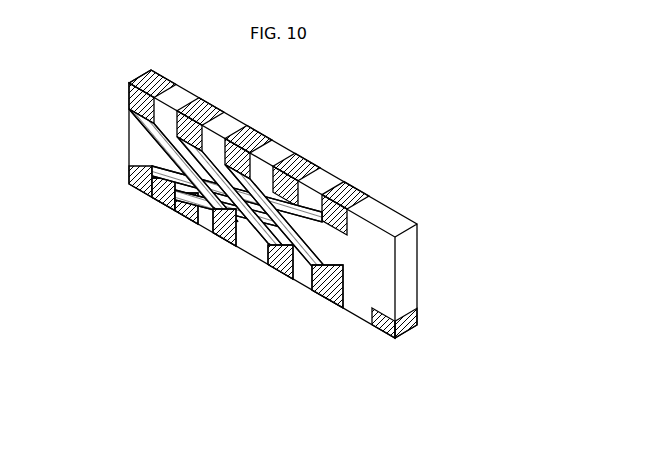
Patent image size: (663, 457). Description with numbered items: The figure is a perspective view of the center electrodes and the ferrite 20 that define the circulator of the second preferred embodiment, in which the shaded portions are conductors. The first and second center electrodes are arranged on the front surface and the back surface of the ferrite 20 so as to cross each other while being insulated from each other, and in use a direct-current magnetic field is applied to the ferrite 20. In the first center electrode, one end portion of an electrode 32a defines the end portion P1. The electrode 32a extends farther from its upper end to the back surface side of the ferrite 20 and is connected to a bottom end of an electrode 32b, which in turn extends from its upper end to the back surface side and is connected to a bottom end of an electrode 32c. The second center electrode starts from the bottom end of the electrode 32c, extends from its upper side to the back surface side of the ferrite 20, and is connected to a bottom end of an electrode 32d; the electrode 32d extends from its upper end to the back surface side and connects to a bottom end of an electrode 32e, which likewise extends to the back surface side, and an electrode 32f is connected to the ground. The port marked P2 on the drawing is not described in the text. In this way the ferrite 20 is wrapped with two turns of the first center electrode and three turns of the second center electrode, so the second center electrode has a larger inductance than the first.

The ferrite 20 is at (129, 127).
The end portion P1 is at (129, 177).
The second port P2 is at (234, 234).
The electrode 32a is at (158, 201).
The electrode 32b is at (339, 229).
The electrode 32c is at (212, 220).
The electrode 32d is at (265, 263).
The electrode 32e is at (313, 277).
The electrode 32f is at (378, 334).